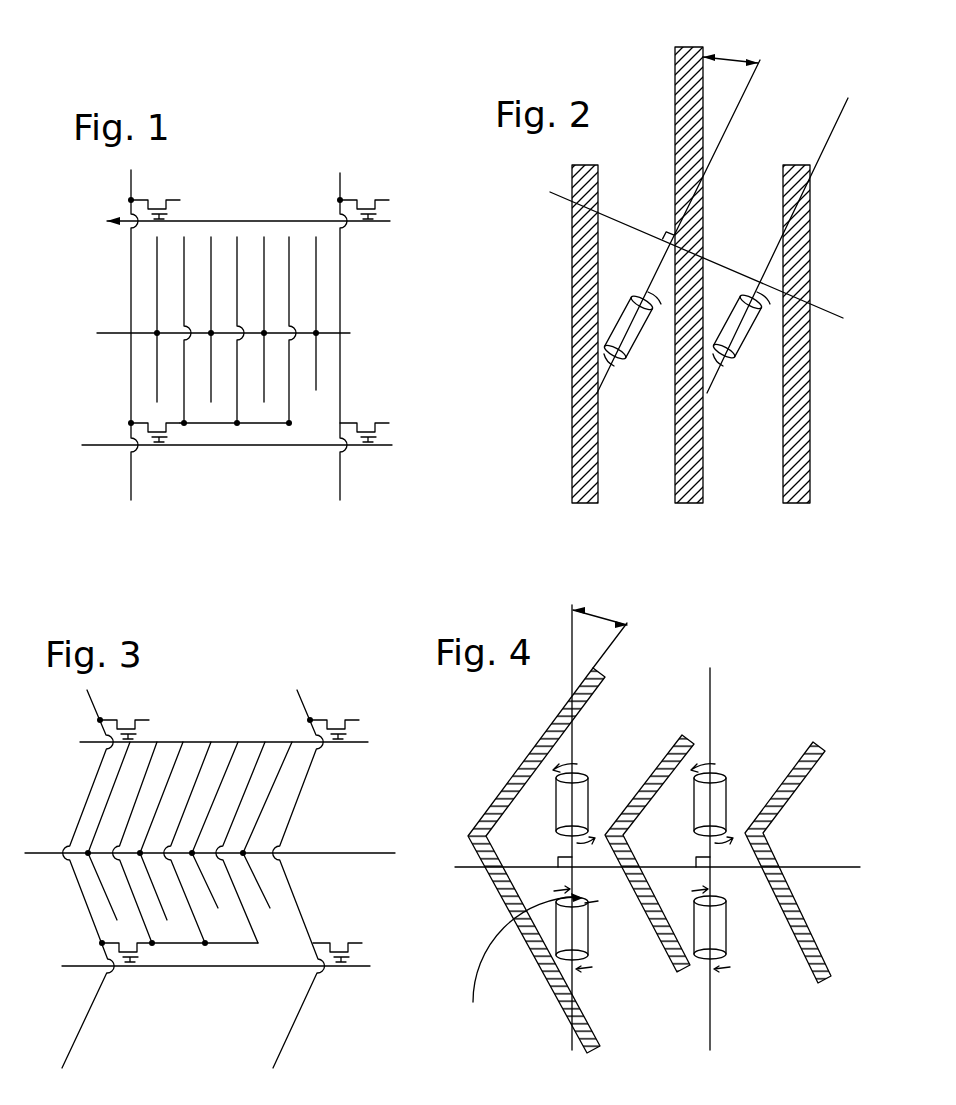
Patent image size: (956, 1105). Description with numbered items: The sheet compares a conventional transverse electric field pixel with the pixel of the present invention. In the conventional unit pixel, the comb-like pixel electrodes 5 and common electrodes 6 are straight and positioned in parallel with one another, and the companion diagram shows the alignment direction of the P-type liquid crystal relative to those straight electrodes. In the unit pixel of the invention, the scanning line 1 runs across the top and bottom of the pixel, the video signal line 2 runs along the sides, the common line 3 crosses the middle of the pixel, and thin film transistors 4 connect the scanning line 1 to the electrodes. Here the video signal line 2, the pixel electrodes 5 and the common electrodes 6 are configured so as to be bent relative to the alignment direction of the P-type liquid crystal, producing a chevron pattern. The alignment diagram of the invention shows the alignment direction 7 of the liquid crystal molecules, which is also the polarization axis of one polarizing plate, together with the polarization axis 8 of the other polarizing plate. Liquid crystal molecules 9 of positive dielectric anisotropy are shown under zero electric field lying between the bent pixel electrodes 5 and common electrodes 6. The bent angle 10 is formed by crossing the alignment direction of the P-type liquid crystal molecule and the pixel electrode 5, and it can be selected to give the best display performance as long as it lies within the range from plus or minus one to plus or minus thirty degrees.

In FIG. 1, the scanning line 1 is at (110, 450).
In FIG. 3, the scanning line 1 is at (92, 745).
In FIG. 1, the video signal line 2 is at (131, 483).
In FIG. 3, the video signal line 2 is at (100, 997).
In FIG. 1, the common line 3 is at (350, 333).
In FIG. 3, the common line 3 is at (302, 852).
In FIG. 1, the thin film transistor 4 is at (163, 438).
In FIG. 3, the thin film transistor 4 is at (148, 955).
In FIG. 1, the pixel electrode 5 is at (292, 393).
In FIG. 2, the pixel electrode 5 is at (585, 503).
In FIG. 3, the pixel electrode 5 is at (243, 903).
In FIG. 4, the pixel electrode 5 is at (540, 955).
In FIG. 1, the common electrode 6 is at (318, 265).
In FIG. 2, the common electrode 6 is at (690, 503).
In FIG. 3, the common electrode 6 is at (278, 782).
In FIG. 4, the common electrode 6 is at (680, 975).
In FIG. 2, the alignment direction of the liquid crystal molecules 7 is at (720, 128).
In FIG. 4, the alignment direction of the liquid crystal molecules 7 is at (573, 755).
In FIG. 2, the polarization axis of the other polarizing plate 8 is at (550, 192).
In FIG. 4, the polarization axis of the other polarizing plate 8 is at (644, 870).
In FIG. 2, the liquid crystal molecule 9 is at (625, 320).
In FIG. 4, the liquid crystal molecule 9 is at (557, 800).
In FIG. 2, the angle 10 is at (733, 44).
In FIG. 4, the angle 10 is at (540, 789).